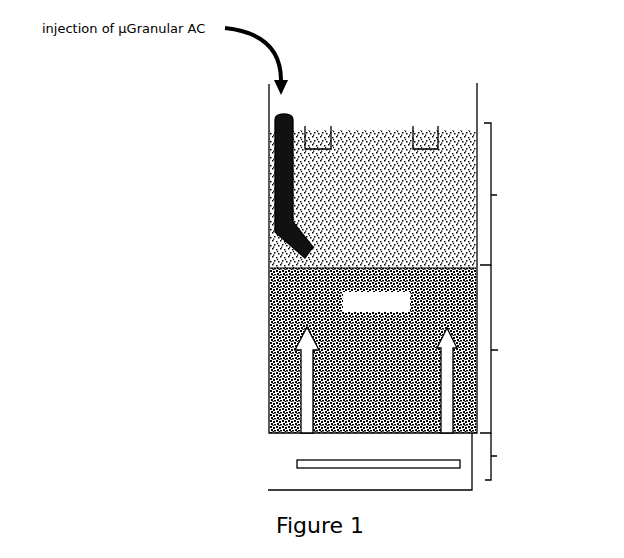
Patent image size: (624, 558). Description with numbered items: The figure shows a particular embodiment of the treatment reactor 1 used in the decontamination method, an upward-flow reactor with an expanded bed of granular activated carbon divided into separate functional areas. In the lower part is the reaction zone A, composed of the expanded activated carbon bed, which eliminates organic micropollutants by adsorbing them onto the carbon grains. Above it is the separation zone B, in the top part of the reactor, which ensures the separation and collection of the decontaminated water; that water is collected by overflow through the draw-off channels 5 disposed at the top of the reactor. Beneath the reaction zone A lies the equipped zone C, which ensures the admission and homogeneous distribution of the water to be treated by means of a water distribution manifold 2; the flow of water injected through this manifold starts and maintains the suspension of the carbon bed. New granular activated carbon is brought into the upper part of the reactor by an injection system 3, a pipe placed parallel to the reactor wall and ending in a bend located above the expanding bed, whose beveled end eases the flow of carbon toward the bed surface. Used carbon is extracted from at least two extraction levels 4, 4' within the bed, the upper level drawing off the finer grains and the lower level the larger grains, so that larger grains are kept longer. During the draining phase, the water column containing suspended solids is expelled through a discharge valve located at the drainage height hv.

The treatment reactor 1 is at (424, 258).
The water distribution manifold 2 is at (286, 470).
The injection system 3 is at (284, 163).
The extraction level 4 is at (312, 380).
The extraction level 4' is at (232, 333).
The draw-off channels 5 is at (374, 121).
The drainage height hv is at (290, 263).
The reaction zone A is at (415, 349).
The separation zone B is at (520, 194).
The equipped zone C is at (414, 461).